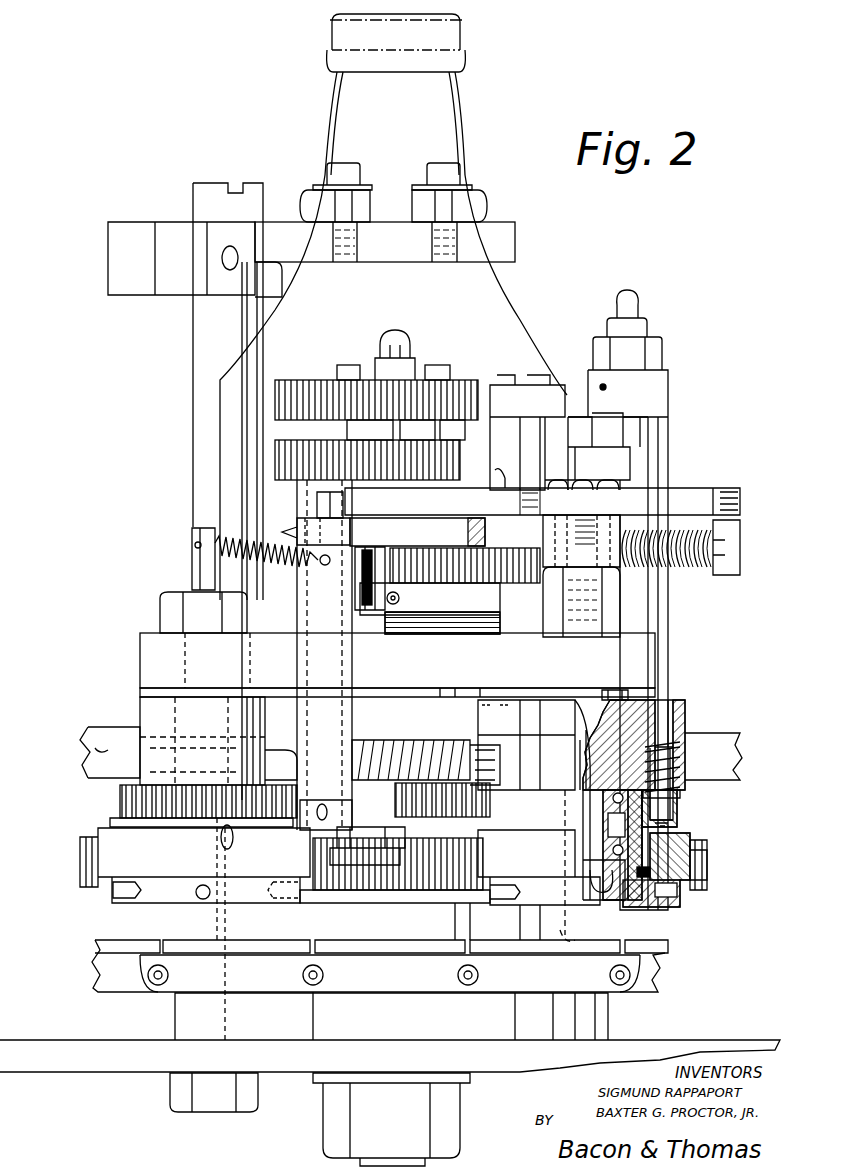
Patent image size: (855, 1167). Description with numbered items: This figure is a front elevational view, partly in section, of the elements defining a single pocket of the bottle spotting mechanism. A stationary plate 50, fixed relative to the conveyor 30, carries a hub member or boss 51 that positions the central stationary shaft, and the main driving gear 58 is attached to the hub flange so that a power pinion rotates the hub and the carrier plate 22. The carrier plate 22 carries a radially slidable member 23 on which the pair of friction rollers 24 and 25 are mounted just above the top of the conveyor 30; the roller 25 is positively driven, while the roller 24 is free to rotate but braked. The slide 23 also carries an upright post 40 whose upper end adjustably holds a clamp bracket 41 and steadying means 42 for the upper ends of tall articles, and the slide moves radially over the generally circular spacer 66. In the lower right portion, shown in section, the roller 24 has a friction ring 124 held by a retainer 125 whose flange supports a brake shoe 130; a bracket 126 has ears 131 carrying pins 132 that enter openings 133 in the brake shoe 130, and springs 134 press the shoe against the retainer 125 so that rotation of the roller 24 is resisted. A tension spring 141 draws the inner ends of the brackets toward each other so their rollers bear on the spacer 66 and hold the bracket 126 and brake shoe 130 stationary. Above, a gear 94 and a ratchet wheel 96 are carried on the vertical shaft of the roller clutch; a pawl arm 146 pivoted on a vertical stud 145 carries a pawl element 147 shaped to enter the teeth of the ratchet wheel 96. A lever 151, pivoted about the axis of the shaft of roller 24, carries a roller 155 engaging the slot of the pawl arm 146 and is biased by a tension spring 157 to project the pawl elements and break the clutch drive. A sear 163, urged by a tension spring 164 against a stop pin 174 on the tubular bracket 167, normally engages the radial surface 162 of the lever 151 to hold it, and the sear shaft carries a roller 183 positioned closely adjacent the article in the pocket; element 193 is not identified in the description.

The carrier plate 22 is at (92, 742).
The radially slidable member 23 is at (150, 655).
The friction roller 24 is at (725, 880).
The friction roller 25 is at (82, 902).
The conveyor 30 is at (668, 953).
The upright post 40 is at (198, 338).
The clamp bracket 41 is at (515, 243).
The steadying means 42 is at (487, 206).
The plate 50 is at (100, 1040).
The hub member or boss 51 is at (178, 1018).
The gear 58 is at (450, 868).
The spacer 66 is at (460, 690).
The gear 94 is at (285, 450).
The ratchet wheel 96 is at (318, 382).
The friction ring 124 is at (707, 850).
The retainer 125 is at (678, 835).
The bracket 126 is at (656, 700).
The brake shoe 130 is at (652, 812).
The ear 131 is at (690, 705).
The pin 132 is at (685, 738).
The opening 133 is at (680, 815).
The spring 134 is at (680, 793).
The tension spring 141 is at (432, 742).
The vertical stud 145 is at (655, 395).
The pawl arm 146 is at (665, 457).
The pawl element 147 is at (483, 386).
The lever 151 is at (700, 490).
The roller 155 is at (505, 478).
The tension spring 157 is at (690, 570).
The radial surface 162 is at (348, 508).
The sear 163 is at (320, 508).
The tension spring 164 is at (245, 580).
The tubular bracket 167 is at (330, 722).
The stop pin 174 is at (380, 562).
The roller 183 is at (410, 840).
The bar 193 is at (388, 550).